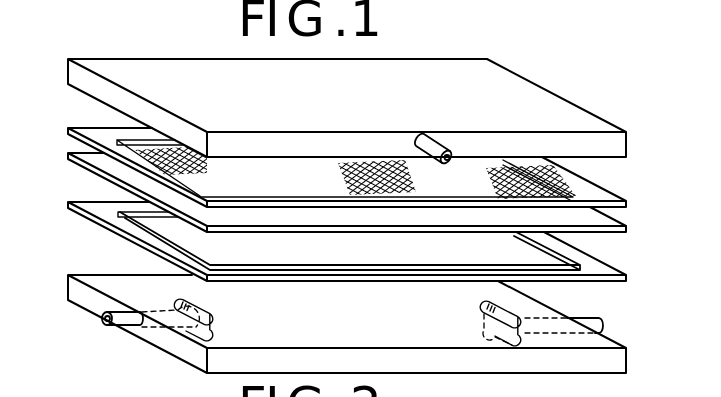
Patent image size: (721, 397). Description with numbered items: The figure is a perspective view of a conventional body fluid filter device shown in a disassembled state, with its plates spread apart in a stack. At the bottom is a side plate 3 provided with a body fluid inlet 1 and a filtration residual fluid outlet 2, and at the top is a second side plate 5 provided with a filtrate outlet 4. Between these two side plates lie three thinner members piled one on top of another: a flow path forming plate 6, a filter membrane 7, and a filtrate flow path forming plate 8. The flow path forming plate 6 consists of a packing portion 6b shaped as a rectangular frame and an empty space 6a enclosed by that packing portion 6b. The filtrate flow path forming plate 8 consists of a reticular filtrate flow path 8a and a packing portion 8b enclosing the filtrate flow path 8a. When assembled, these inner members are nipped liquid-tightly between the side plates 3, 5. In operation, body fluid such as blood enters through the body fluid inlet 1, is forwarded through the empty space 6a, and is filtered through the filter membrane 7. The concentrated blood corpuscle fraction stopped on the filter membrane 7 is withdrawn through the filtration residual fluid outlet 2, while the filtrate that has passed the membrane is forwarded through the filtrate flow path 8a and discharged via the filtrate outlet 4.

The body fluid inlet 1 is at (120, 330).
The filtration residual fluid outlet 2 is at (599, 324).
The side plate 3 is at (420, 358).
The filtrate outlet 4 is at (431, 138).
The side plate 5 is at (552, 108).
The flow path forming plate 6 is at (78, 226).
The empty space 6a is at (196, 238).
The packing portion 6b is at (590, 268).
The filter membrane 7 is at (100, 160).
The filtrate flow path forming plate 8 is at (76, 119).
The reticular filtrate flow path 8a is at (545, 183).
The packing portion 8b is at (598, 203).